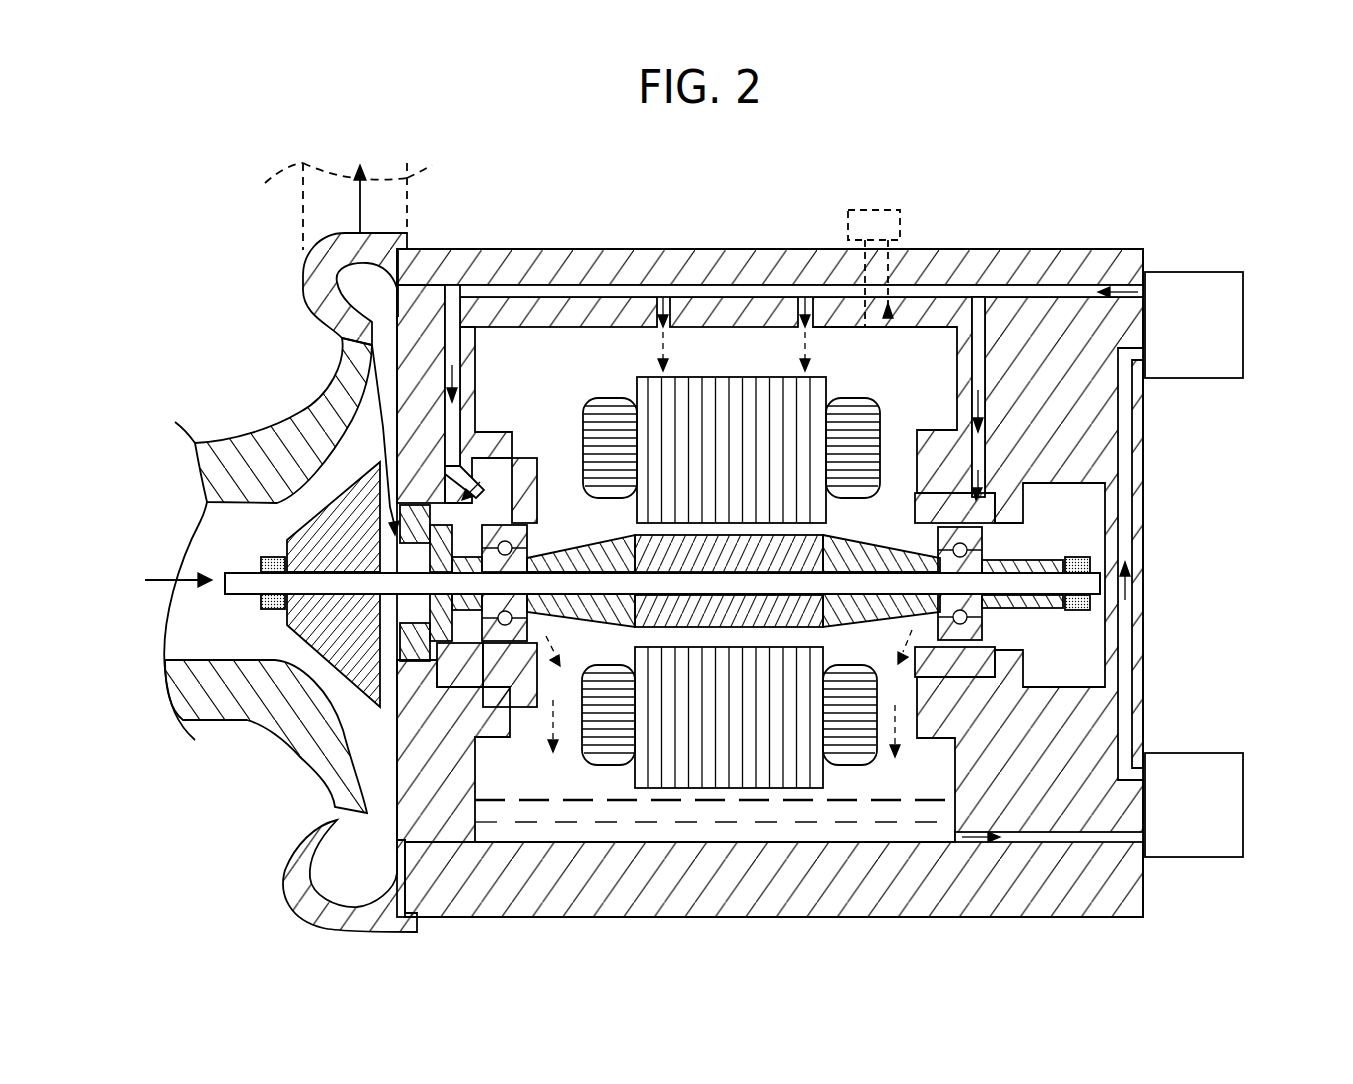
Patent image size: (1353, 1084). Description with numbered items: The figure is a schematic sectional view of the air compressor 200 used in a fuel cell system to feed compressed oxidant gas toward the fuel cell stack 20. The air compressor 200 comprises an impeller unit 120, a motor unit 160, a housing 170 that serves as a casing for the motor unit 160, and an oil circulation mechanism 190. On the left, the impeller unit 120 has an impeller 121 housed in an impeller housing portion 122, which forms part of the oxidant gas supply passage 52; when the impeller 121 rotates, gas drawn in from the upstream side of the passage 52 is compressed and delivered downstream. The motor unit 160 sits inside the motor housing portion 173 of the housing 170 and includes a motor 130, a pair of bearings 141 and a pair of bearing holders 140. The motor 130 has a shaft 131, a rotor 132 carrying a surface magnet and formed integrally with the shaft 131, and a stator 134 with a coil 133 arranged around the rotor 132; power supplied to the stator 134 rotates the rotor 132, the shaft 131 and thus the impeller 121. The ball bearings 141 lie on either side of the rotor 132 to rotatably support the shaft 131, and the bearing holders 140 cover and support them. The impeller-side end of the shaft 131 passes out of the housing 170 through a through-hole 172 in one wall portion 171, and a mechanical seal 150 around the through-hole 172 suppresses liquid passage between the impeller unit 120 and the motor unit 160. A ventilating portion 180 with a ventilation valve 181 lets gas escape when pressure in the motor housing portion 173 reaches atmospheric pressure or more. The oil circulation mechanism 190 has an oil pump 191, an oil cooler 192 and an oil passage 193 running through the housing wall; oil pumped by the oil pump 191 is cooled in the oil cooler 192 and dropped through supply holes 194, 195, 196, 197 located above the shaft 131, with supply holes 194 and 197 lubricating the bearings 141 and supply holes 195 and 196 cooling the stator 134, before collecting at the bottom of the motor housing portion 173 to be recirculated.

The fuel cell stack 20 is at (348, 197).
The oxidant gas supply passage 52 is at (212, 410).
The impeller unit 120 is at (162, 782).
The impeller 121 is at (365, 700).
The impeller housing portion 122 is at (367, 712).
The motor 130 is at (733, 368).
The shaft 131 is at (1030, 560).
The rotor 132 is at (827, 537).
The coil 133 is at (827, 510).
The stator 134 is at (855, 492).
The bearing holder 140 is at (517, 457).
The bearing 141 is at (533, 537).
The mechanical seal 150 is at (335, 820).
The motor unit 160 is at (566, 368).
The housing 170 is at (565, 249).
The one wall portion 171 is at (485, 440).
The through-hole 172 is at (348, 420).
The motor housing portion 173 is at (620, 330).
The ventilating portion 180 is at (898, 300).
The ventilation valve 181 is at (875, 210).
The oil circulation mechanism 190 is at (1182, 645).
The oil pump 191 is at (1222, 753).
The oil cooler 192 is at (1188, 272).
The oil passage 193 is at (997, 290).
The supply hole 194 is at (947, 530).
The supply hole 195 is at (808, 340).
The supply hole 196 is at (666, 340).
The supply hole 197 is at (485, 500).
The air compressor 200 is at (1098, 188).